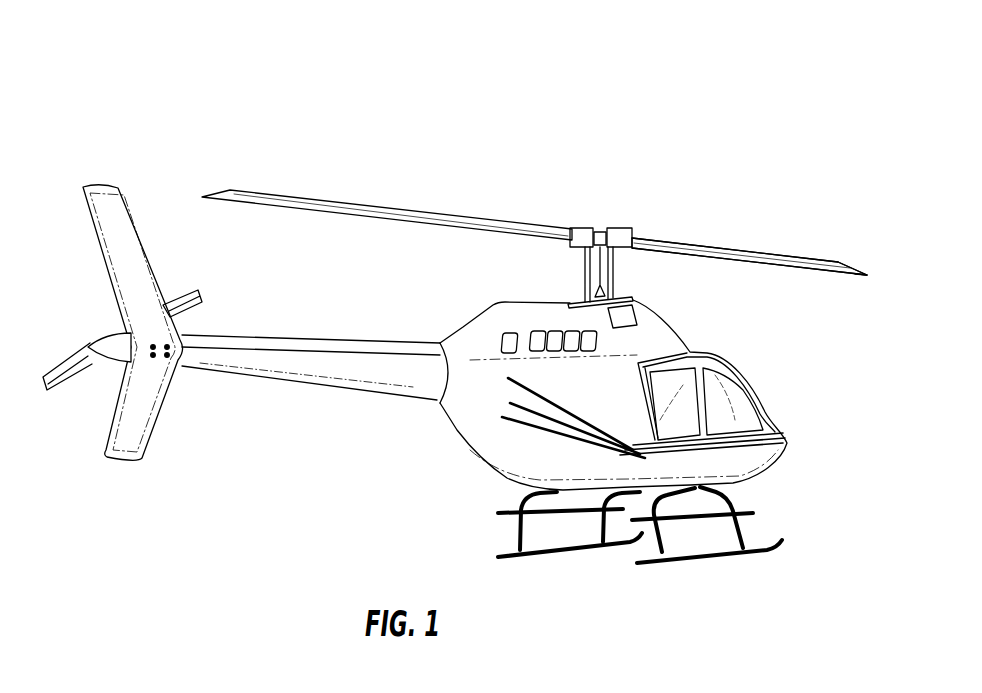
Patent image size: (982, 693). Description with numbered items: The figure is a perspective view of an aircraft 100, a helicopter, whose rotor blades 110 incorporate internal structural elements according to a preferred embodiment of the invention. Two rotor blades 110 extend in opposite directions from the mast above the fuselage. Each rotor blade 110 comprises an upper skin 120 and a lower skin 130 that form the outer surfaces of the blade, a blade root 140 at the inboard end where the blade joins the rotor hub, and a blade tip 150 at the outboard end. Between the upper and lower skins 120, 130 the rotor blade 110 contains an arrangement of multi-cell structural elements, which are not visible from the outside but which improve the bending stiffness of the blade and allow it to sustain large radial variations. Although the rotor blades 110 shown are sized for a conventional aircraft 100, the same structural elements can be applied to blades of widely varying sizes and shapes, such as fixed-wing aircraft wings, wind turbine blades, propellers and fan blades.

The aircraft 100 is at (461, 291).
The rotor blade 110 is at (307, 198).
The upper skin 120 is at (710, 243).
The lower skin 130 is at (743, 262).
The blade root 140 is at (617, 230).
The blade tip 150 is at (857, 263).